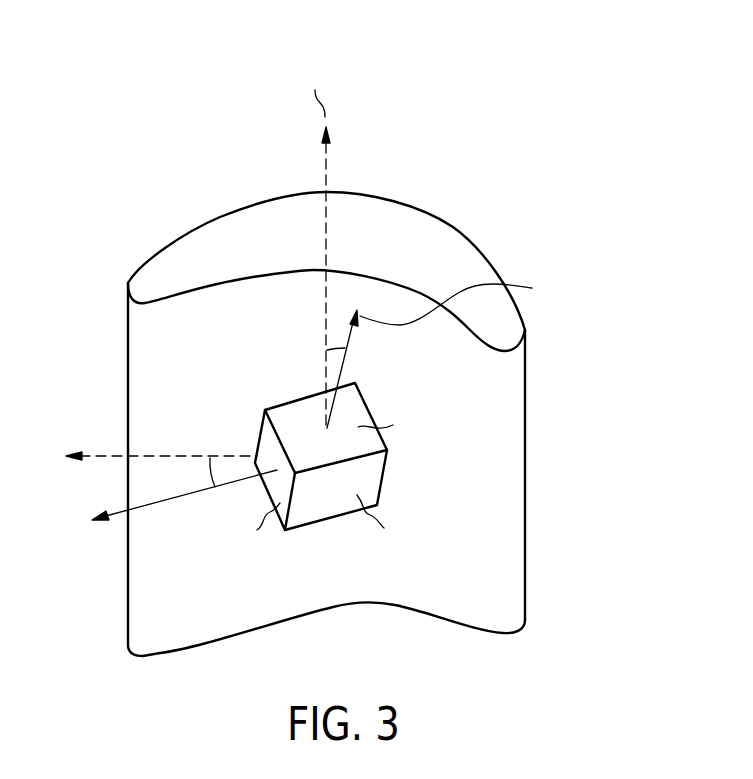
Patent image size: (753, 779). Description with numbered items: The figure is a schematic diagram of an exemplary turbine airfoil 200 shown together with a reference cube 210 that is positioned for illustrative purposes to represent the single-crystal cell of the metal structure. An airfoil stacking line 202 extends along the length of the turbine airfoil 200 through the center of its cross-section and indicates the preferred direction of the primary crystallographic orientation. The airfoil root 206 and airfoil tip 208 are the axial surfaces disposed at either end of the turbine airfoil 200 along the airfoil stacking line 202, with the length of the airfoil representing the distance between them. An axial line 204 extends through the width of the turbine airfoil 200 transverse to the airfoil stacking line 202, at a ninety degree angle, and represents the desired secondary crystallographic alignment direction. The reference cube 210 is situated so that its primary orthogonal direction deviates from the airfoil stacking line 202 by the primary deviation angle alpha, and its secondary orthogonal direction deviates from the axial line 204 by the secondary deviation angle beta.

The turbine airfoil 200 is at (402, 423).
The airfoil stacking line 202 is at (325, 168).
The axial line 204 is at (98, 458).
The airfoil root 206 is at (202, 640).
The airfoil tip 208 is at (159, 266).
The reference cube 210 is at (340, 540).